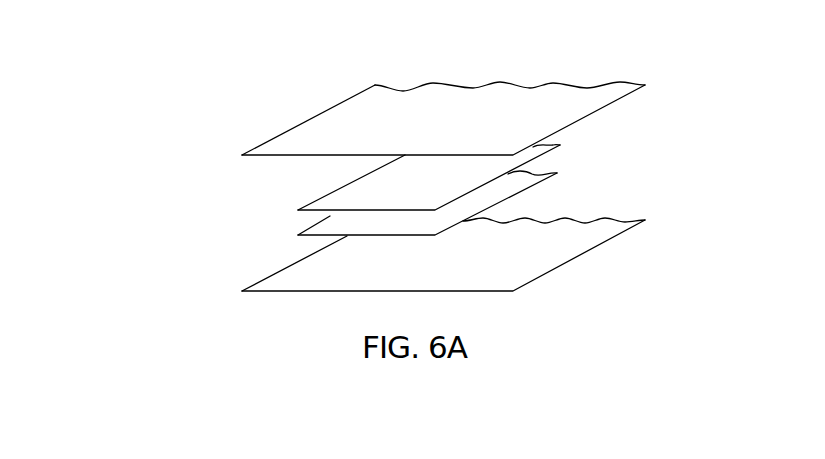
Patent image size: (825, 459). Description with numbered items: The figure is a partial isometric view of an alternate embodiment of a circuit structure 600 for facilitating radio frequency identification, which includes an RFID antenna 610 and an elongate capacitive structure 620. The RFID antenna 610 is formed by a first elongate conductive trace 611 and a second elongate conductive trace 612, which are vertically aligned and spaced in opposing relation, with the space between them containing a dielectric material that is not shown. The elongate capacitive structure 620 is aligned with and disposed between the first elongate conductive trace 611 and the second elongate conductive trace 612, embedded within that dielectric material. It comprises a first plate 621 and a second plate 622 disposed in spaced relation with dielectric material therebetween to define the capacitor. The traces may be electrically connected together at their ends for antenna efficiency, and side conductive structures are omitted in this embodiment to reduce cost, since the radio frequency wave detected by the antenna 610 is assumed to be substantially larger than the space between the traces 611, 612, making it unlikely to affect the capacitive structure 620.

The circuit structure 600 is at (232, 75).
The RFID antenna 610 is at (629, 95).
The first elongate conductive trace 611 is at (578, 97).
The second elongate conductive trace 612 is at (557, 258).
The elongate capacitive structure 620 is at (560, 187).
The first plate 621 is at (358, 198).
The second plate 622 is at (345, 229).